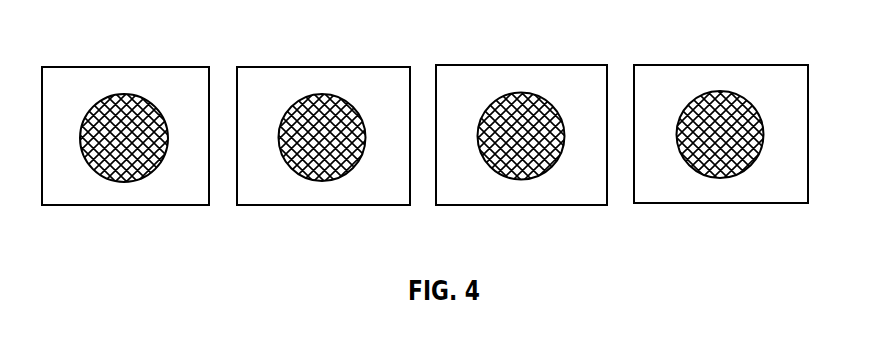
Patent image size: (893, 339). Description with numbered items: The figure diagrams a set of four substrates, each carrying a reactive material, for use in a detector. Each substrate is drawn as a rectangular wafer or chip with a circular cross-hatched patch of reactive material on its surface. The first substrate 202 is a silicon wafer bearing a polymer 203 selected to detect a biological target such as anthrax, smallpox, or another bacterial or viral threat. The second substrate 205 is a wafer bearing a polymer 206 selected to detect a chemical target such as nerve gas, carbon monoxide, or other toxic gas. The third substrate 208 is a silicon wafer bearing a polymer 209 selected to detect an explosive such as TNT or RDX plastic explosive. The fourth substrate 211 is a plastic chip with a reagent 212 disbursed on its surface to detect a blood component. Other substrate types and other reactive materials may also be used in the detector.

The substrate 202 is at (123, 67).
The polymer 203 is at (98, 102).
The substrate 205 is at (324, 66).
The polymer 206 is at (300, 99).
The substrate 208 is at (522, 64).
The polymer 209 is at (495, 101).
The substrate 211 is at (720, 64).
The reagent 212 is at (693, 98).